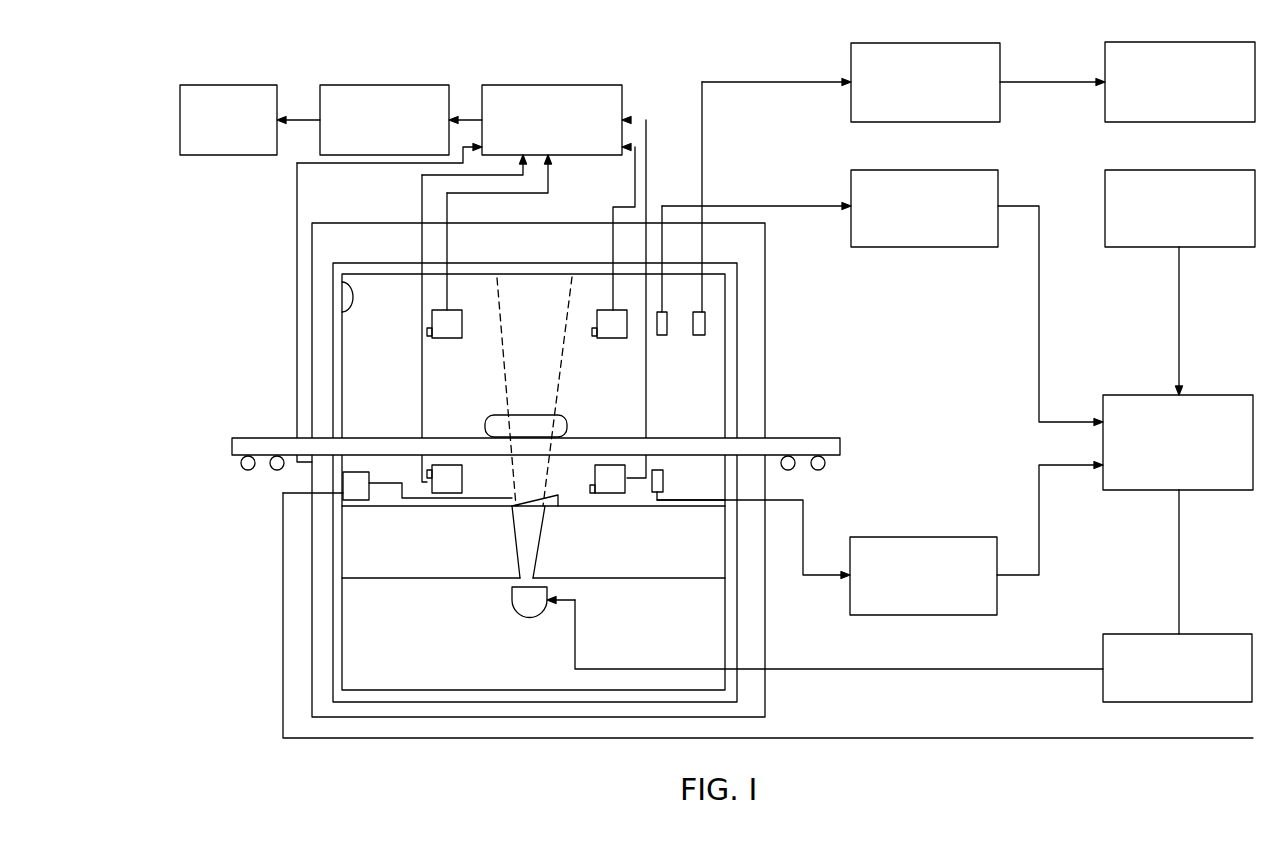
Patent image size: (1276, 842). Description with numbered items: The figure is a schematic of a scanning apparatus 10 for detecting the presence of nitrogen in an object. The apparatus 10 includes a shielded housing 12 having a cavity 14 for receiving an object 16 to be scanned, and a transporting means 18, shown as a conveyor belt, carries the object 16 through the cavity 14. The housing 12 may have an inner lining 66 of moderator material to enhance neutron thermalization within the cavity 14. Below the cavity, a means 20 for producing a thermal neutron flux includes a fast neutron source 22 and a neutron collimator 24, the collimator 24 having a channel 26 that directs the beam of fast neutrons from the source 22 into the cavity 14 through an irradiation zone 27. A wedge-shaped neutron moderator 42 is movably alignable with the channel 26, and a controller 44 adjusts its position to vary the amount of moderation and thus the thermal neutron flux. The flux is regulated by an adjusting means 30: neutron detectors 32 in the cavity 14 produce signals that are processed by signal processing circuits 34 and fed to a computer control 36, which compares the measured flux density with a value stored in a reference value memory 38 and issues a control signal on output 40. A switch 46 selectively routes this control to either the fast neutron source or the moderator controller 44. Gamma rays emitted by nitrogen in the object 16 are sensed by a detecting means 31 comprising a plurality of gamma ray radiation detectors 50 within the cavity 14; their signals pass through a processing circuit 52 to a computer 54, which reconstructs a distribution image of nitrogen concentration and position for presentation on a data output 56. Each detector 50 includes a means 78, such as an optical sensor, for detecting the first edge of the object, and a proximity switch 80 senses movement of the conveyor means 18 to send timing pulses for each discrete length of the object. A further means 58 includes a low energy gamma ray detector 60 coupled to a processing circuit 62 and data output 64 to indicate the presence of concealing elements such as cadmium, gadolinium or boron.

The scanning apparatus 10 is at (646, 96).
The housing 12 is at (312, 313).
The cavity 14 is at (342, 290).
The object 16 is at (485, 428).
The means for transporting the object 18 is at (232, 437).
The means for producing a thermal neutron flux 20 is at (494, 629).
The fast neutron source 22 is at (528, 618).
The neutron collimator 24 is at (410, 580).
The channel 26 is at (522, 553).
The irradiation zone 27 is at (547, 330).
The means for adjusting the thermal neutron flux 30 is at (1206, 345).
The means for detecting gamma rays 31 is at (463, 92).
The neutron detector 32 is at (663, 336).
The signal processing circuit 34 is at (851, 180).
The computer control 36 is at (1137, 490).
The reference value memory 38 is at (1105, 180).
The output 40 is at (1179, 600).
The neutron moderator 42 is at (552, 495).
The controller 44 is at (343, 497).
The switch 46 is at (1103, 690).
The gamma ray radiation detectors 50 is at (450, 340).
The processing circuit 52 is at (598, 157).
The computer 54 is at (334, 85).
The data output 56 is at (218, 157).
The means for detecting low energy gamma rays 58 is at (790, 64).
The low energy gamma ray detector 60 is at (710, 322).
The processing circuit 62 is at (851, 112).
The data output 64 is at (1105, 105).
The inner lining 66 is at (343, 345).
The means for detecting the first edge of the object 78 is at (592, 333).
The proximity switch 80 is at (336, 468).